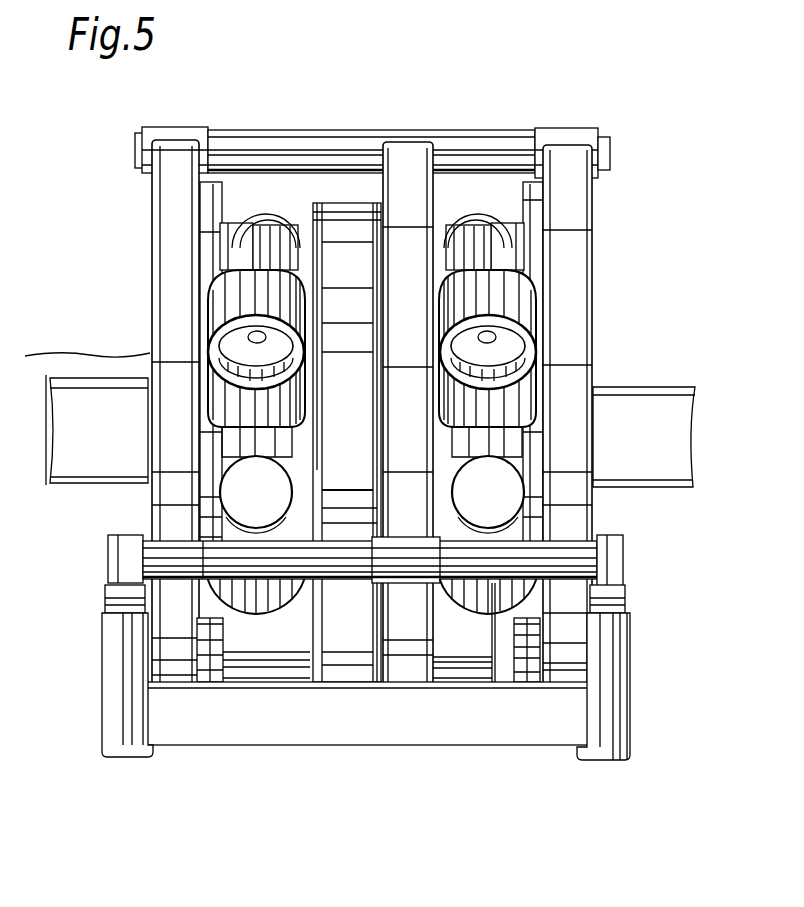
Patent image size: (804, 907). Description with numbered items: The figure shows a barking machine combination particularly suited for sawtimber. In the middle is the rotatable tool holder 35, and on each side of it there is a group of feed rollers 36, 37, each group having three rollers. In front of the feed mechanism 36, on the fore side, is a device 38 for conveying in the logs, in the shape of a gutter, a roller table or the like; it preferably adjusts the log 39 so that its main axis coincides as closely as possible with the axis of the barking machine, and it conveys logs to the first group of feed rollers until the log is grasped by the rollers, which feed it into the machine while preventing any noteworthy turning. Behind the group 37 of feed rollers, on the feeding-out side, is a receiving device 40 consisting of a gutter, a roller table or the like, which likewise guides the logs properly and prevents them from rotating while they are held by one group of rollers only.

The rotatable tool holder 35 is at (337, 242).
The feed rollers (first group) 36 is at (240, 253).
The feed rollers (second group) 37 is at (505, 247).
The device for conveying in the logs 38 is at (114, 445).
The log 39 is at (100, 368).
The receiving device 40 is at (645, 413).